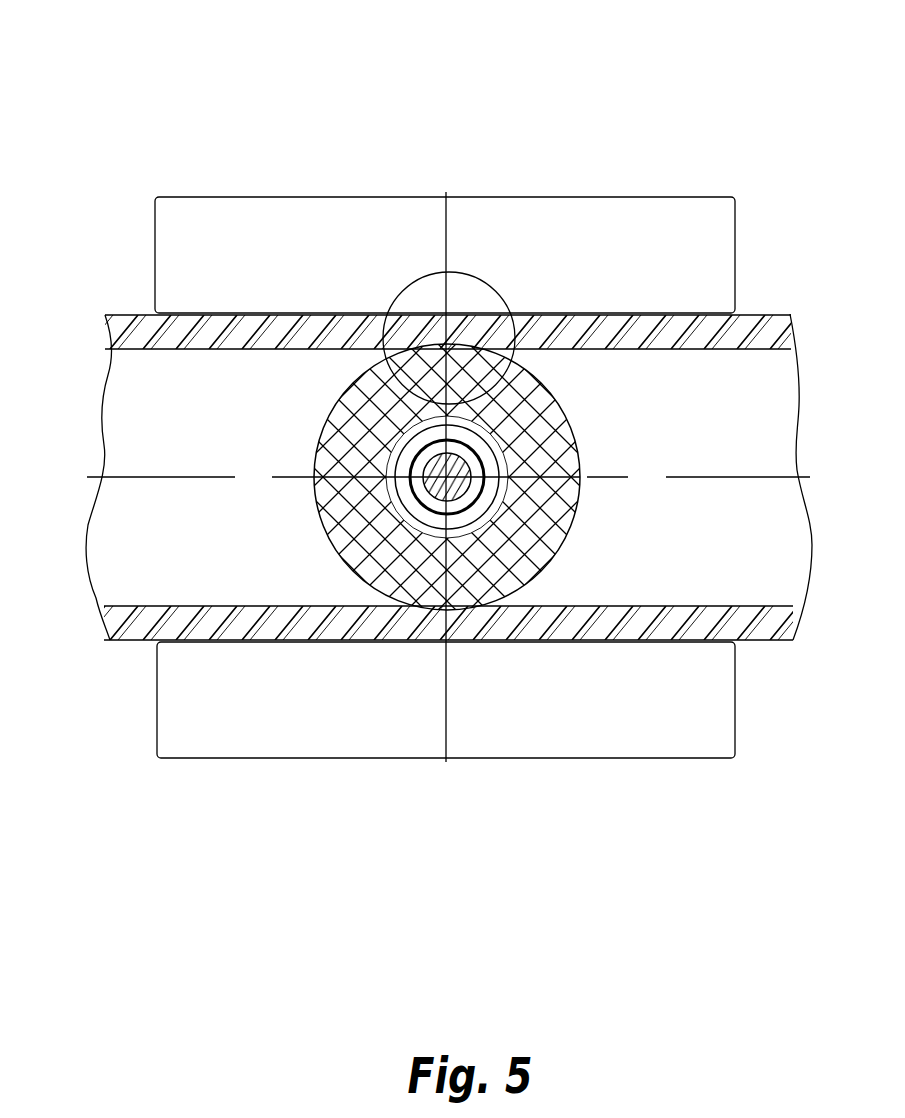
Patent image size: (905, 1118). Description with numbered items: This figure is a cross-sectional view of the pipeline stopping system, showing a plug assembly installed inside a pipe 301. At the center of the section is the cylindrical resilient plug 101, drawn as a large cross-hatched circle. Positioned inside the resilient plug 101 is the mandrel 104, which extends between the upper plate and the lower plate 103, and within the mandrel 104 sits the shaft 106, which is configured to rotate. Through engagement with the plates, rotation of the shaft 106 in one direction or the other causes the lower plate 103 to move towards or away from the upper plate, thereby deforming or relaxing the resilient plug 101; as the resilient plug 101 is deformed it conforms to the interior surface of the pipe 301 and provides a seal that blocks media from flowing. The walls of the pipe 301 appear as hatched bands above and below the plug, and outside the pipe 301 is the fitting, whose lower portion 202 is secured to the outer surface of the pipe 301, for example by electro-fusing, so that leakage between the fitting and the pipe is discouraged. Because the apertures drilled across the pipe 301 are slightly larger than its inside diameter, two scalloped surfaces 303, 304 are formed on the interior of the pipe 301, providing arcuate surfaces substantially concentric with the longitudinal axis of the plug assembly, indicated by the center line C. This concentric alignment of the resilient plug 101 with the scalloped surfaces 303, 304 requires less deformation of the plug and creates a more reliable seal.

The resilient plug 101 is at (526, 395).
The lower plate 103 is at (442, 522).
The mandrel 104 is at (492, 513).
The shaft 106 is at (440, 522).
The lower portion 202 is at (235, 228).
The pipe 301 is at (148, 327).
The scalloped surface 303 is at (423, 327).
The scalloped surface 304 is at (458, 623).
The center axis C is at (477, 278).